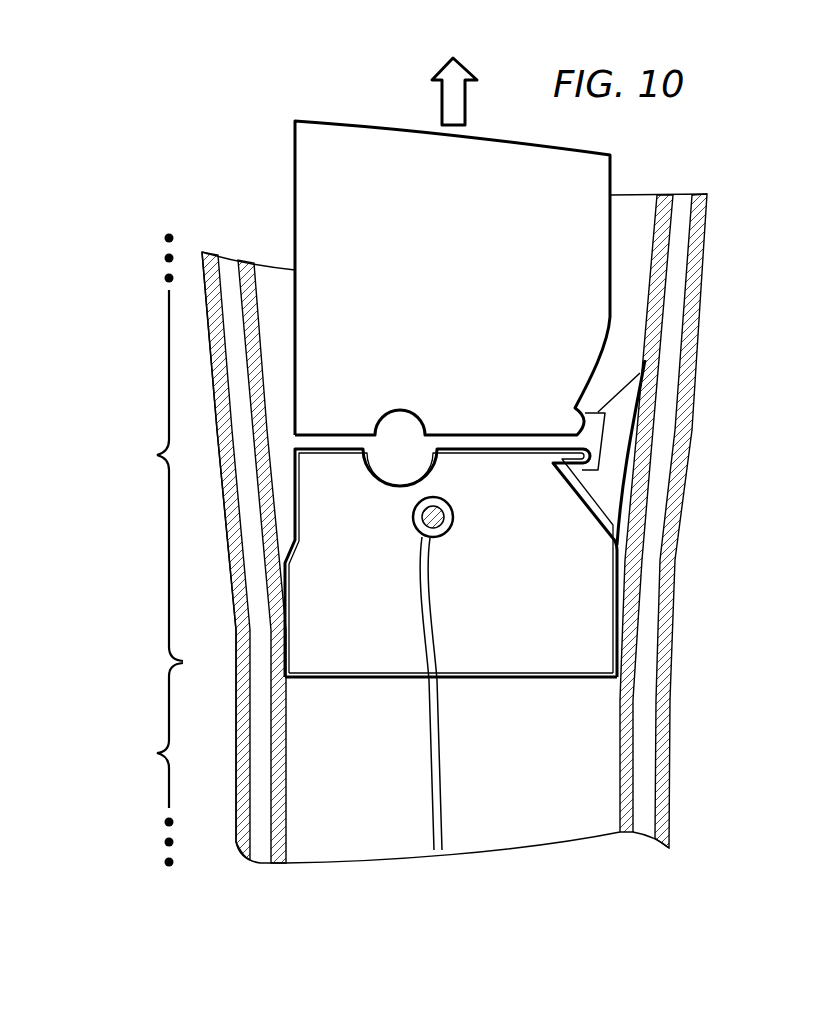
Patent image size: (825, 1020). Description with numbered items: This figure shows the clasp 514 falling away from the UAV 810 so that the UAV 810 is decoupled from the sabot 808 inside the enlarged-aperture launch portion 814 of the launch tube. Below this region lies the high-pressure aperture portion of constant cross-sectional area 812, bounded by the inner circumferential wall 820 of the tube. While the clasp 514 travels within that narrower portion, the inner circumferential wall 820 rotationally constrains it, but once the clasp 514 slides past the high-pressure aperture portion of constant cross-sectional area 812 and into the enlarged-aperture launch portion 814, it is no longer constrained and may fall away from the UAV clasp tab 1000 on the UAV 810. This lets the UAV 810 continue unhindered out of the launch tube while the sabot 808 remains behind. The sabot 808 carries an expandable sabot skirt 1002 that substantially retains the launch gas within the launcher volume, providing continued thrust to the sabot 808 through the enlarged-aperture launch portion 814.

The UAV 810 is at (315, 175).
The inner circumferential wall 820 is at (658, 212).
The UAV clasp tab 1000 is at (585, 410).
The clasp 514 is at (627, 415).
The sabot 808 is at (628, 542).
The expandable sabot skirt 1002 is at (618, 657).
The enlarged-aperture launch portion 814 is at (152, 453).
The high-pressure aperture portion of constant cross-sectional area 812 is at (152, 751).